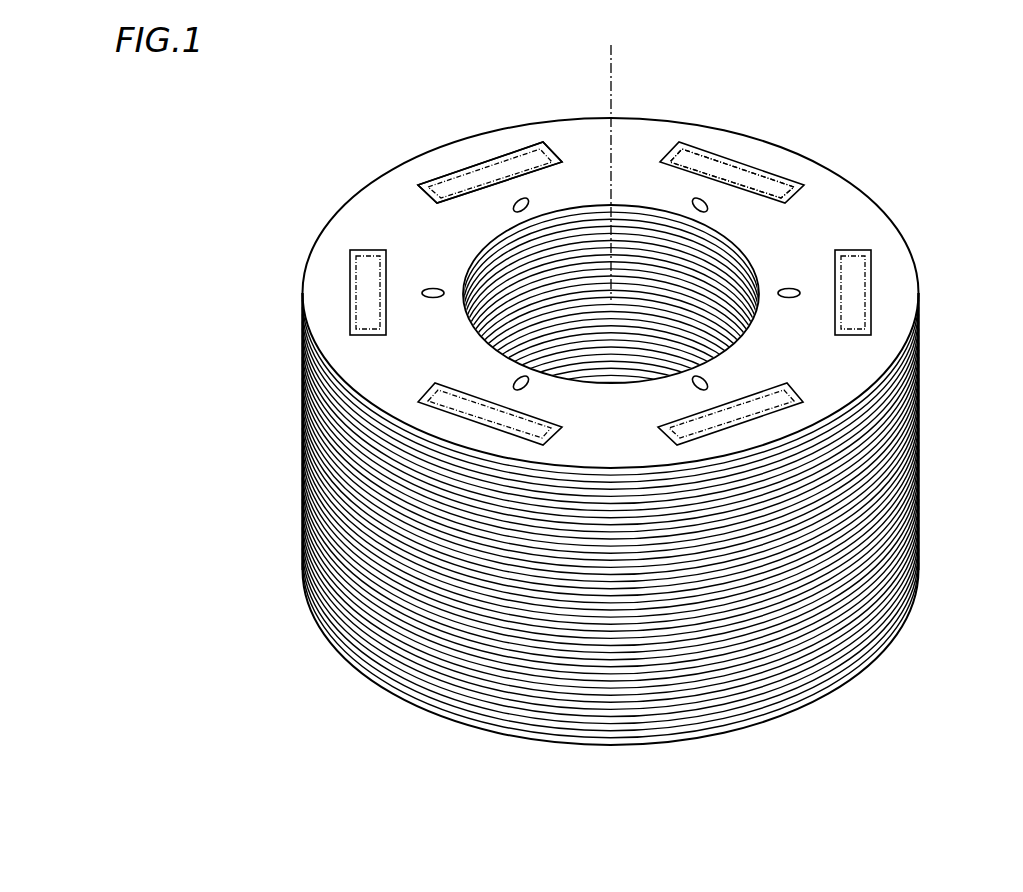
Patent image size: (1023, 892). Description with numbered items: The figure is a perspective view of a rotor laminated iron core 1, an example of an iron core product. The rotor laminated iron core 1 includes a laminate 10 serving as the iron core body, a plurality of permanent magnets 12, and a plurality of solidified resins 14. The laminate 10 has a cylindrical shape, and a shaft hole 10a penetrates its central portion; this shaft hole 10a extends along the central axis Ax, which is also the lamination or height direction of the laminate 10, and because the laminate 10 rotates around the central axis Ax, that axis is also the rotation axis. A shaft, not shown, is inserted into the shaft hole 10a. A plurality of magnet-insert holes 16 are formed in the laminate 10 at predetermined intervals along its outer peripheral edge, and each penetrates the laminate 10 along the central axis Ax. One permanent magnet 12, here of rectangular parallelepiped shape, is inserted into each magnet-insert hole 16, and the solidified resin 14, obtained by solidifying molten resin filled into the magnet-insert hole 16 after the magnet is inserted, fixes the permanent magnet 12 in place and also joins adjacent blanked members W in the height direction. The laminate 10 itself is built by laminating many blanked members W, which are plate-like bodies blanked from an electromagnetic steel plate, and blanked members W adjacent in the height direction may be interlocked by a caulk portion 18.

The rotor laminated iron core 1 is at (940, 114).
The laminate 10 is at (958, 546).
The shaft hole 10a is at (746, 285).
The permanent magnet 12 is at (713, 160).
The solidified resin 14 is at (549, 145).
The magnet-insert hole 16 is at (529, 150).
The caulk portion 18 is at (432, 289).
The blanked member W is at (366, 668).
The central axis Ax is at (615, 78).